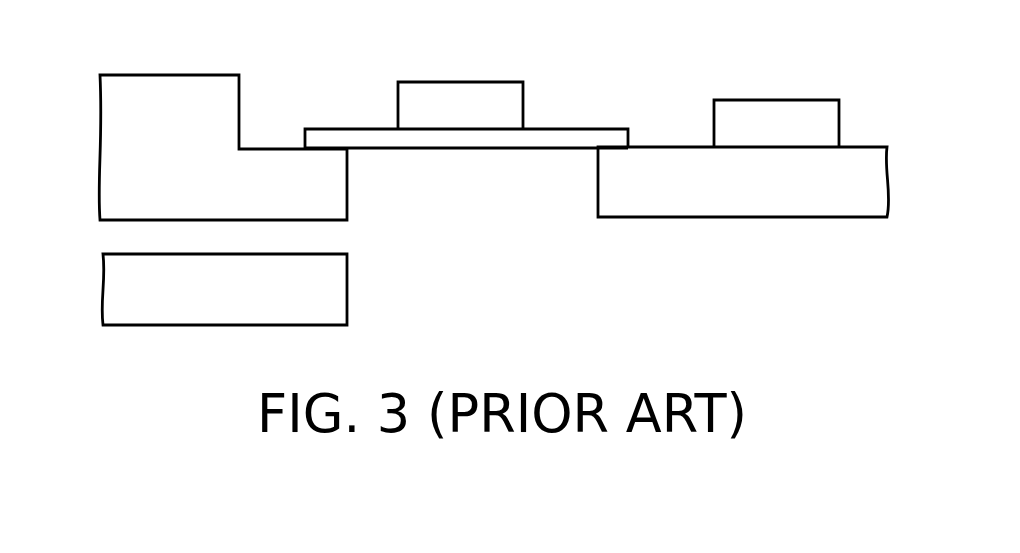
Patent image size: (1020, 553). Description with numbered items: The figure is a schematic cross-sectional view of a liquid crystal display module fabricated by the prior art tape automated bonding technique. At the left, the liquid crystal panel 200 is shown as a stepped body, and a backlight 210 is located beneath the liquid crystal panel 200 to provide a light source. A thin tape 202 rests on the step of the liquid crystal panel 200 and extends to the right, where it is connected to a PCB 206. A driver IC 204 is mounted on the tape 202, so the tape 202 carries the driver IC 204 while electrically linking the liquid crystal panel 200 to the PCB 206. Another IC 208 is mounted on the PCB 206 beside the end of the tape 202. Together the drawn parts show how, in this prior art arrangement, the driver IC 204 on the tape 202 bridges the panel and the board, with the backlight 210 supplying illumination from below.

The liquid crystal panel 200 is at (183, 95).
The tape 202 is at (355, 138).
The driver IC 204 is at (463, 100).
The PCB 206 is at (705, 195).
The IC 208 is at (778, 125).
The backlight 210 is at (300, 293).